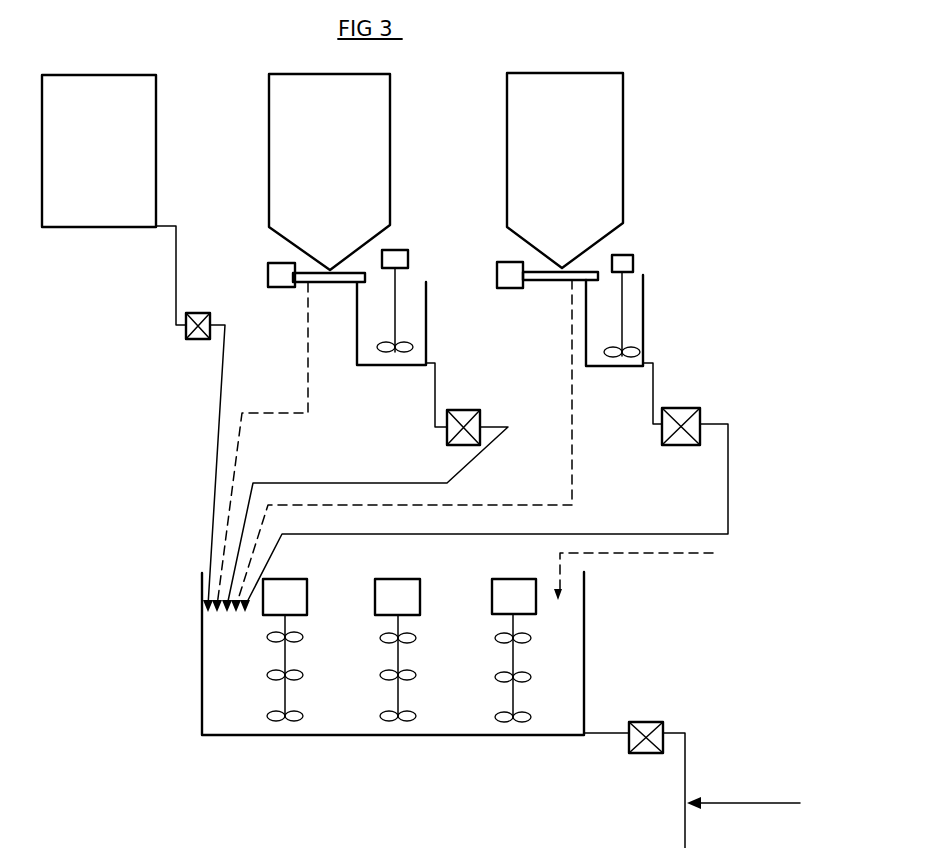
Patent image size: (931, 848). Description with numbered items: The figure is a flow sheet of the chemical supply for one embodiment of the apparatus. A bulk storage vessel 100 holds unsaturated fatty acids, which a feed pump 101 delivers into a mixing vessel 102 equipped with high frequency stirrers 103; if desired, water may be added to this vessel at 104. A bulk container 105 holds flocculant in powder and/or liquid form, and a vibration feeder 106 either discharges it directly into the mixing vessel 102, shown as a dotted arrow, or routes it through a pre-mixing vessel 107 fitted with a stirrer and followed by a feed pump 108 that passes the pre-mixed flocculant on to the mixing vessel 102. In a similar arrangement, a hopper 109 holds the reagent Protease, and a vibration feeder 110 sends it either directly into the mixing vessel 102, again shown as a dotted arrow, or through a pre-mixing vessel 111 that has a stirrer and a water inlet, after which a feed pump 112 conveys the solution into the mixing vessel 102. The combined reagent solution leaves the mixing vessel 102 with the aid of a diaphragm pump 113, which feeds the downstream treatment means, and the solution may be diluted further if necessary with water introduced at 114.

The bulk storage vessel 100 is at (113, 185).
The feed pump 101 is at (197, 341).
The mixing vessel 102 is at (216, 657).
The high frequency stirrers 103 is at (512, 655).
The water addition point 104 is at (622, 553).
The bulk container for flocculant 105 is at (378, 168).
The vibration feeder 106 is at (276, 280).
The pre-mixing vessel 107 is at (415, 316).
The valve 108 is at (460, 414).
The hopper 109 is at (613, 178).
The vibration feeder 110 is at (535, 278).
The pre-mixing vessel 111 is at (633, 316).
The feed pump 112 is at (682, 413).
The diaphragm pump 113 is at (641, 750).
The water introduction point 114 is at (729, 805).